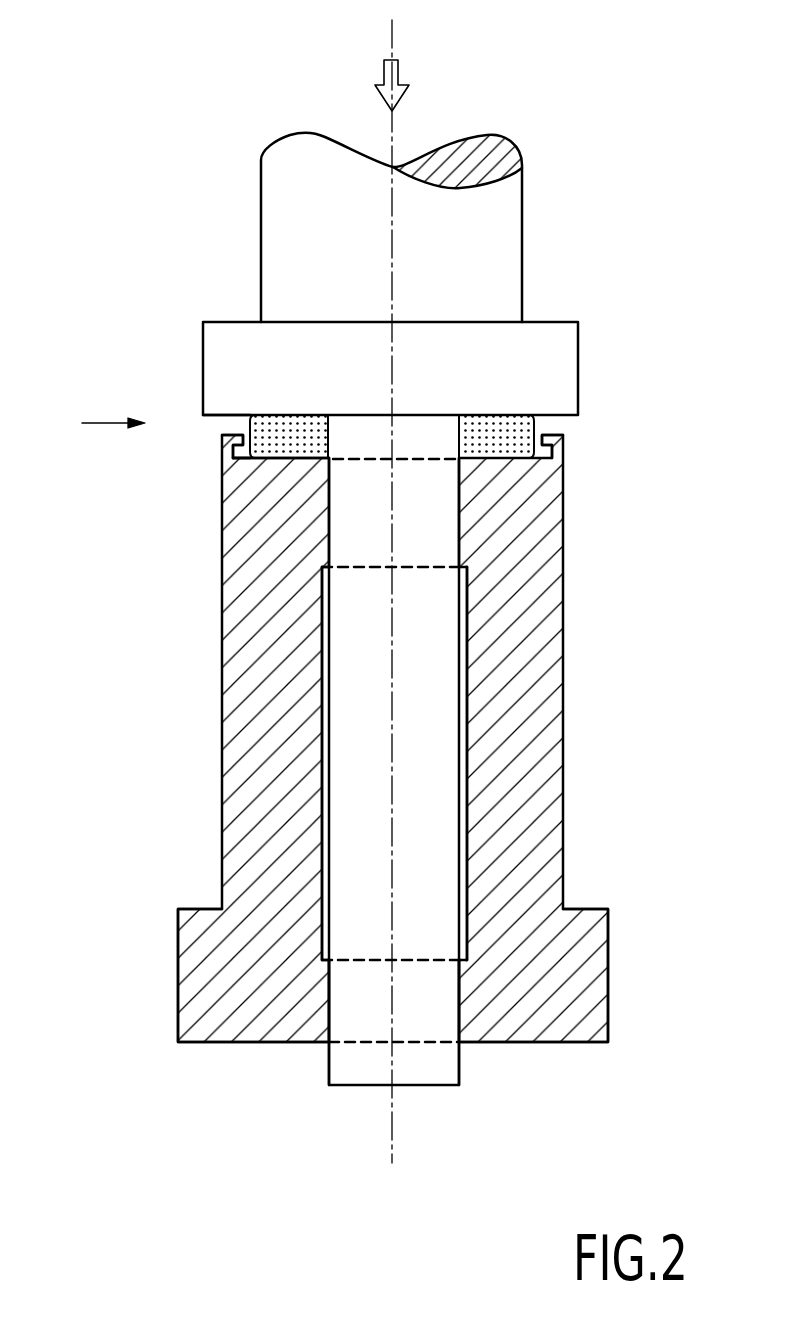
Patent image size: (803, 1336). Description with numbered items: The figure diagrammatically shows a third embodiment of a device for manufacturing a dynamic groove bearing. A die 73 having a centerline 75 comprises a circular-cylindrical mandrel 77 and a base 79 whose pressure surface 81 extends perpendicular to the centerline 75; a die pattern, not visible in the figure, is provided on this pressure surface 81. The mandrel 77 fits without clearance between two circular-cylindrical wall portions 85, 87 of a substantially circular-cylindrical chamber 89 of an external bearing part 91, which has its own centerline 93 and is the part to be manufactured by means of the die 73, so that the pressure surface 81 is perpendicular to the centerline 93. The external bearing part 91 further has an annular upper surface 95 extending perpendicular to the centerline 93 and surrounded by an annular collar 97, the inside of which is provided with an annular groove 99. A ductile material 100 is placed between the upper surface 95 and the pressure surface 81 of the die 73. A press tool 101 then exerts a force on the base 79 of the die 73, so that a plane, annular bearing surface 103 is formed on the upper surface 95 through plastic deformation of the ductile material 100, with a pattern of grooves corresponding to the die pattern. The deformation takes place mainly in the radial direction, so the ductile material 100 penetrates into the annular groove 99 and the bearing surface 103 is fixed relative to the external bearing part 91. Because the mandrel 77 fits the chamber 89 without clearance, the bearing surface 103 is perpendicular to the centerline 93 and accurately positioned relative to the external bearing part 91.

The die 73 is at (80, 437).
The centerline 75 is at (393, 32).
The circular-cylindrical mandrel 77 is at (432, 688).
The base 79 is at (563, 378).
The pressure surface 81 is at (222, 415).
The circular-cylindrical wall portion 85 is at (460, 493).
The circular-cylindrical wall portion 87 is at (462, 985).
The chamber 89 is at (463, 627).
The external bearing part 91 is at (525, 788).
The centerline 93 is at (396, 1130).
The annular upper surface 95 is at (282, 462).
The annular collar 97 is at (227, 450).
The annular groove 99 is at (553, 452).
The ductile material 100 is at (280, 422).
The press tool 101 is at (490, 218).
The bearing surface 103 is at (480, 415).